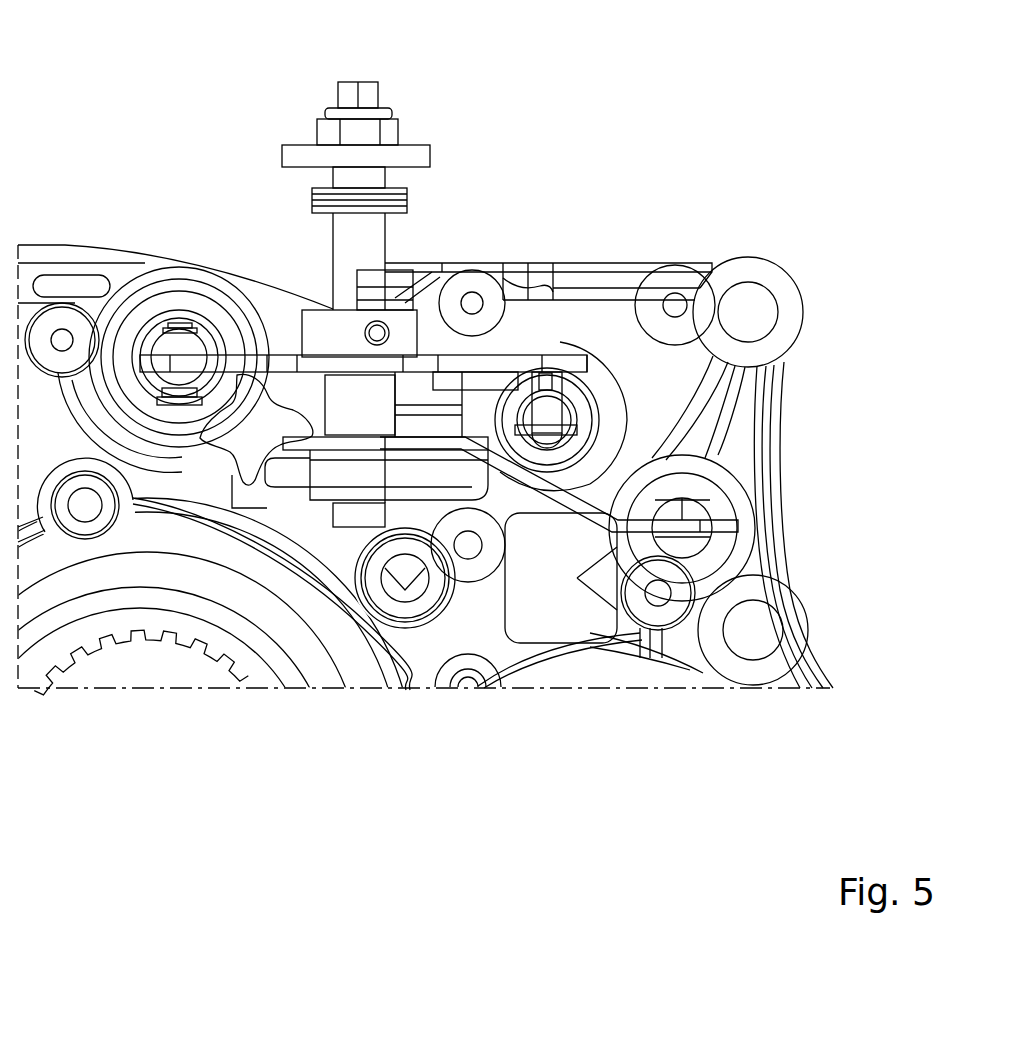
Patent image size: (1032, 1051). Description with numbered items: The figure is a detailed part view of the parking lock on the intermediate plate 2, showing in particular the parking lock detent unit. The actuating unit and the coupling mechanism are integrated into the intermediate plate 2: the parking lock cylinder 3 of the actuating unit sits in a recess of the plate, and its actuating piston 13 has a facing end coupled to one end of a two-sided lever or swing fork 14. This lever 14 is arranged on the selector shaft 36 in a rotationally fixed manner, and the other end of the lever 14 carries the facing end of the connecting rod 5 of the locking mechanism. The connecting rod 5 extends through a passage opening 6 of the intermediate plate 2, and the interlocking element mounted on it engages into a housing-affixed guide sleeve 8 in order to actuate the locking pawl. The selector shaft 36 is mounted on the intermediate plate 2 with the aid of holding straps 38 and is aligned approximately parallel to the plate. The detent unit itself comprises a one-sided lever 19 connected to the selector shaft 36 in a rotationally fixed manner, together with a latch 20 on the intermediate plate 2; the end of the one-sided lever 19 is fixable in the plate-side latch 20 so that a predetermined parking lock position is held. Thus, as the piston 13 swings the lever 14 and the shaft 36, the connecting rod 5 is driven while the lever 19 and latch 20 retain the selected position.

The intermediate plate 2 is at (595, 320).
The parking lock cylinder 3 is at (145, 325).
The connecting rod 5 is at (545, 435).
The passage opening 6 is at (625, 410).
The guide sleeve 8 is at (573, 440).
The actuating piston 13 is at (190, 350).
The two-sided lever 14 is at (578, 365).
The one-sided lever 19 is at (588, 508).
The latch 20 is at (693, 517).
The selector shaft 36 is at (363, 238).
The holding straps 38 is at (395, 297).